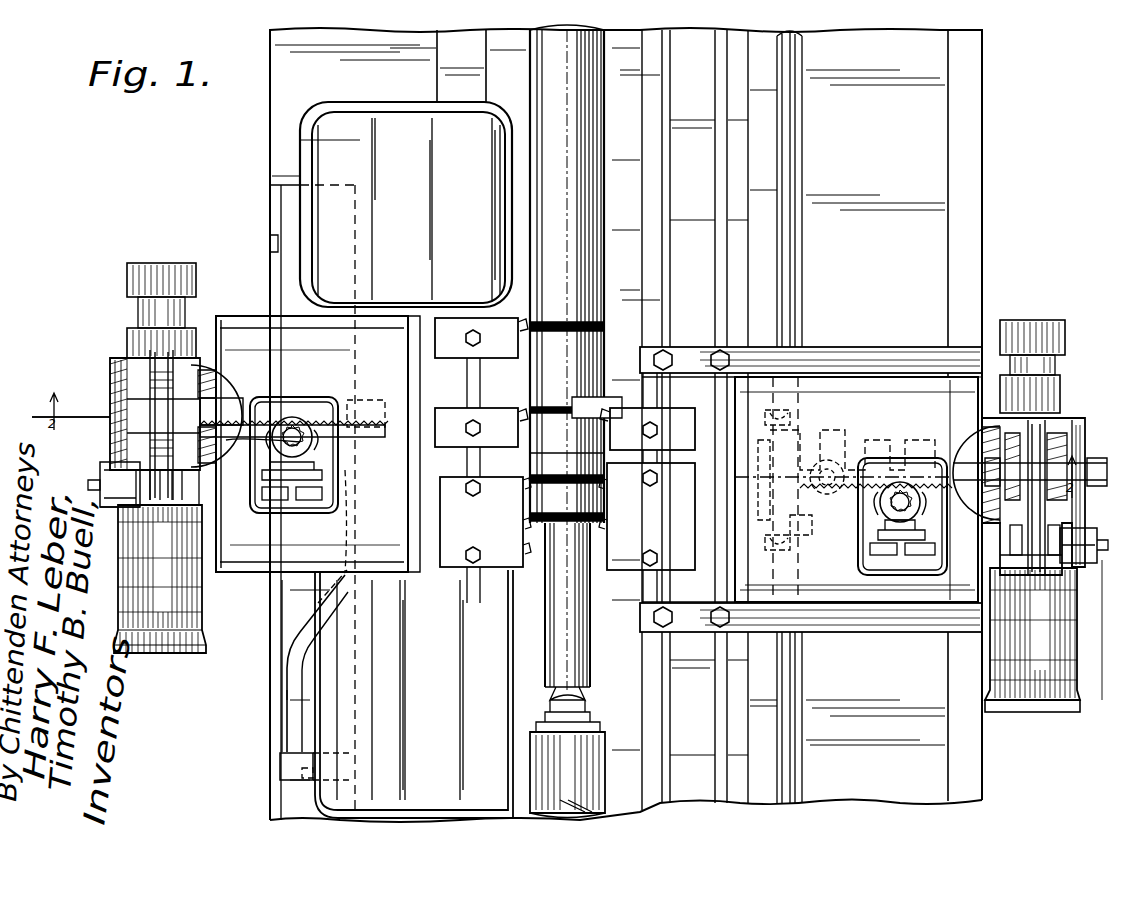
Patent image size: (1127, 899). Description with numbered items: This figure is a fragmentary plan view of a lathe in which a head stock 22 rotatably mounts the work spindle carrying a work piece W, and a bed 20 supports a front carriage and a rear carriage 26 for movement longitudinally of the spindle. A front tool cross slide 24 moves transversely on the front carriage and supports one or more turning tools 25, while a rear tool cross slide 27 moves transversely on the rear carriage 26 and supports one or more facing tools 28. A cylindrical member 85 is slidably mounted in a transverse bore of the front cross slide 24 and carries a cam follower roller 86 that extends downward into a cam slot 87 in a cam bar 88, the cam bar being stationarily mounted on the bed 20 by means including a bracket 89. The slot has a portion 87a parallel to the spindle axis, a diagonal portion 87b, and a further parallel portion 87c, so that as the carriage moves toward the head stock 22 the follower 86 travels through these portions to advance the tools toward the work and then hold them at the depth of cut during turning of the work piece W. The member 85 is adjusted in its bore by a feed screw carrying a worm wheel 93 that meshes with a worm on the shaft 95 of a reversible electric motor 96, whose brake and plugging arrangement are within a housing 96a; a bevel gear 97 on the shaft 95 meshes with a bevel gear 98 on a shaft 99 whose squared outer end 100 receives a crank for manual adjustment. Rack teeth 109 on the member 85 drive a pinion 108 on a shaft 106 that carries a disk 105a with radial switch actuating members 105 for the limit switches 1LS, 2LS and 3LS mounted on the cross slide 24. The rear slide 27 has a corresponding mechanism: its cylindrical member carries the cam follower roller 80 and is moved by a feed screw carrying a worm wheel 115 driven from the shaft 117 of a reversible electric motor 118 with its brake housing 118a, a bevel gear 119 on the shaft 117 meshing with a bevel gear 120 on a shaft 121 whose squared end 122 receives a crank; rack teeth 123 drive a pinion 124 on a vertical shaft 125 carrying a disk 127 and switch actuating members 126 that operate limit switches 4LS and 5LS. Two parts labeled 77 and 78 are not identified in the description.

The bed 20 is at (272, 125).
The head stock 22 is at (383, 707).
The front tool cross slide 24 is at (262, 322).
The turning tools 25 is at (526, 332).
The rear carriage 26 is at (878, 352).
The rear tool cross slide 27 is at (806, 375).
The facing tools 28 is at (602, 518).
The housing flange 77 is at (982, 378).
The cam 78 is at (830, 430).
The cam follower roller 80 is at (838, 392).
The cylindrical member 85 is at (220, 410).
The cam follower roller 86 is at (340, 410).
The cam slot 87 is at (292, 705).
The cam slot portion 87a is at (286, 697).
The diagonal cam slot portion 87b is at (300, 640).
The cam slot portion 87c is at (348, 488).
The cam bar 88 is at (284, 620).
The bracket 89 is at (287, 797).
The worm wheel 93 is at (148, 405).
The shaft 95 is at (175, 505).
The reversible electric motor 96 is at (162, 640).
The housing 96a is at (158, 290).
The bevel gear 97 is at (165, 490).
The bevel gear 98 is at (185, 495).
The shaft 99 is at (110, 508).
The squared outer end 100 is at (108, 478).
The switch actuating members 105 is at (335, 437).
The disk 105a is at (290, 416).
The shaft 106 is at (282, 420).
The pinion 108 is at (300, 420).
The rack teeth 109 is at (232, 445).
The worm wheel 115 is at (1052, 430).
The shaft 117 is at (1035, 555).
The reversible electric motor 118 is at (1025, 700).
The housing 118a is at (1030, 340).
The bevel gear 119 is at (1030, 535).
The bevel gear 120 is at (1045, 562).
The shaft 121 is at (1068, 550).
The squared outer end 122 is at (1102, 560).
The rack teeth 123 is at (812, 482).
The pinion 124 is at (918, 425).
The vertical shaft 125 is at (900, 520).
The switch actuating members 126 is at (922, 492).
The disk 127 is at (902, 490).
The limit switch 1LS is at (272, 500).
The limit switch 2LS is at (292, 500).
The limit switch 3LS is at (312, 500).
The limit switch 4LS is at (880, 548).
The limit switch 5LS is at (920, 550).
The work piece W is at (582, 370).